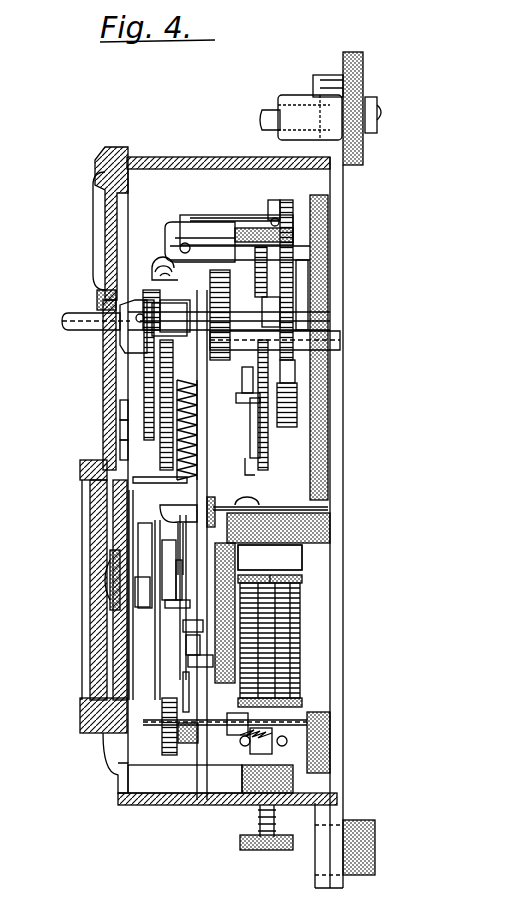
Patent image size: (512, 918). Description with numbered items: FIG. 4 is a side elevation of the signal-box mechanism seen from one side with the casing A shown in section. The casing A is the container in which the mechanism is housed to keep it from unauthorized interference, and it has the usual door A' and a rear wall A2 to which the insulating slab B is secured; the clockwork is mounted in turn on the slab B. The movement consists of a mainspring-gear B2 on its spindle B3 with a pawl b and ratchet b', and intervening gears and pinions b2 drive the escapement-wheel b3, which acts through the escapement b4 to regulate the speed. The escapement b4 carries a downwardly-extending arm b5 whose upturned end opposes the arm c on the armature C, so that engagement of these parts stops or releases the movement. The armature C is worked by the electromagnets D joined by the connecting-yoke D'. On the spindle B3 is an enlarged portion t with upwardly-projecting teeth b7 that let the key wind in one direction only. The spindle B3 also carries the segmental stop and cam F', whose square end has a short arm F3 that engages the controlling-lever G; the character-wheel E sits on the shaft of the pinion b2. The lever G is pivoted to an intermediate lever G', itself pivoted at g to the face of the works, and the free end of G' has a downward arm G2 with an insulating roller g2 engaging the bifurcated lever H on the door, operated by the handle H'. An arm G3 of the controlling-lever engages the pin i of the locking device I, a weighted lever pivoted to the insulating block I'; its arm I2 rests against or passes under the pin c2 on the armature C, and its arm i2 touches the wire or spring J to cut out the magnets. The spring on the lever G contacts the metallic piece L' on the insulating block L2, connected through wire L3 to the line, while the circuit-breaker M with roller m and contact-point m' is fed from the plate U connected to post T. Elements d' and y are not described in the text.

The casing A is at (227, 506).
The door A' is at (133, 545).
The rear wall A2 is at (326, 510).
The post T is at (270, 113).
The circuit-breaker M is at (189, 234).
The contact-point m' is at (236, 220).
The roller m is at (156, 258).
The metallic plate U is at (240, 233).
The mainspring-gear B2 is at (268, 272).
The slab of insulating material B is at (300, 295).
The pawl b is at (259, 272).
The ratchet b' is at (266, 311).
The teeth b7 is at (166, 304).
The enlarged portion t is at (133, 303).
The spindle B3 is at (90, 336).
The segmental stop and cam F' is at (108, 370).
The short arm F3 is at (165, 412).
The character-wheel E is at (170, 422).
The pivot g is at (175, 440).
The insulating block L2 is at (75, 426).
The metallic piece L' is at (64, 446).
The wire L3 is at (14, 412).
The insulating-block I' is at (181, 609).
The controlling-lever G is at (91, 595).
The intermediate lever G' is at (89, 565).
The downwardly-extending arm G2 is at (140, 545).
The lever H is at (94, 610).
The handle H' is at (74, 580).
The roller g2 is at (112, 578).
The arm G3 is at (175, 574).
The pin i is at (165, 600).
The arm i2 is at (185, 622).
The wire or spring J is at (190, 638).
The arm c is at (190, 654).
The arm I2 is at (172, 692).
The escapement-wheel b3 is at (248, 438).
The escapement b4 is at (248, 458).
The gears and pinions b2 is at (268, 448).
The downwardly-extending arm b5 is at (372, 548).
The connecting-yoke D' is at (280, 558).
The electromagnets D is at (278, 641).
The locking device I is at (313, 591).
The spring d' is at (279, 722).
The pin c2 is at (230, 713).
The armature C is at (229, 752).
The screw y is at (278, 822).